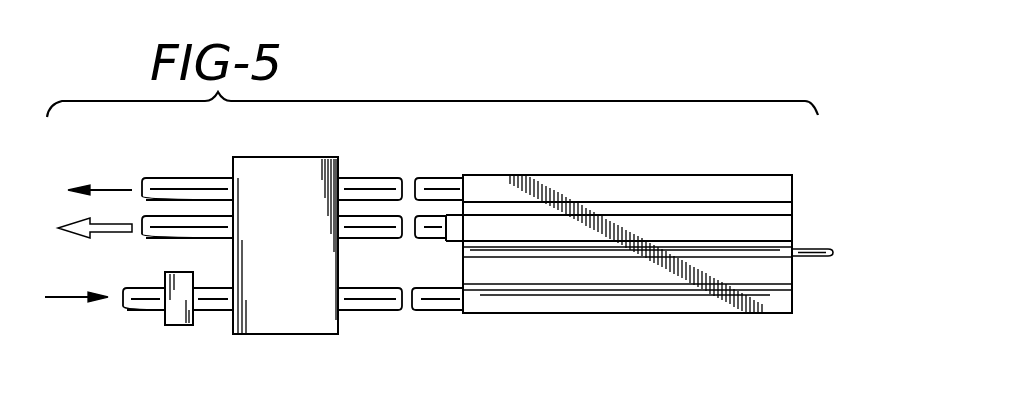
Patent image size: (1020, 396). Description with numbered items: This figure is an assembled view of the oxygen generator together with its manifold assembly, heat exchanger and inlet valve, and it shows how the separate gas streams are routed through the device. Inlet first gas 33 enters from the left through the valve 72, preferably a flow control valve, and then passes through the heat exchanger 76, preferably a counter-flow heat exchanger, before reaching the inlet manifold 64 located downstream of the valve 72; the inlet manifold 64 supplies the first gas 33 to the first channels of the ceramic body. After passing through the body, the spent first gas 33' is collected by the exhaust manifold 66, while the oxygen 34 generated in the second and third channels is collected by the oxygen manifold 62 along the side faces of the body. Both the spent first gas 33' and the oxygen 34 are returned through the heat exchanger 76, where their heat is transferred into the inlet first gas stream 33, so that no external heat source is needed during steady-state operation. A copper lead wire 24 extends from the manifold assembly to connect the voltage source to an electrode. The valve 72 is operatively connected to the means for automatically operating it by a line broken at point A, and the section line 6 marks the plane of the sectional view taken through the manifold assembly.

The spent first gas 33' is at (100, 158).
The oxygen 34 is at (110, 234).
The first gas 33 is at (76, 326).
The heat exchanger 76 is at (310, 320).
The valve 72 is at (178, 323).
The broken line point A is at (178, 265).
The exhaust manifold 66 is at (783, 190).
The oxygen manifold 62 is at (778, 228).
The inlet manifold 64 is at (763, 302).
The lead wire 24 is at (815, 258).
The section line 6- 6 is at (518, 140).